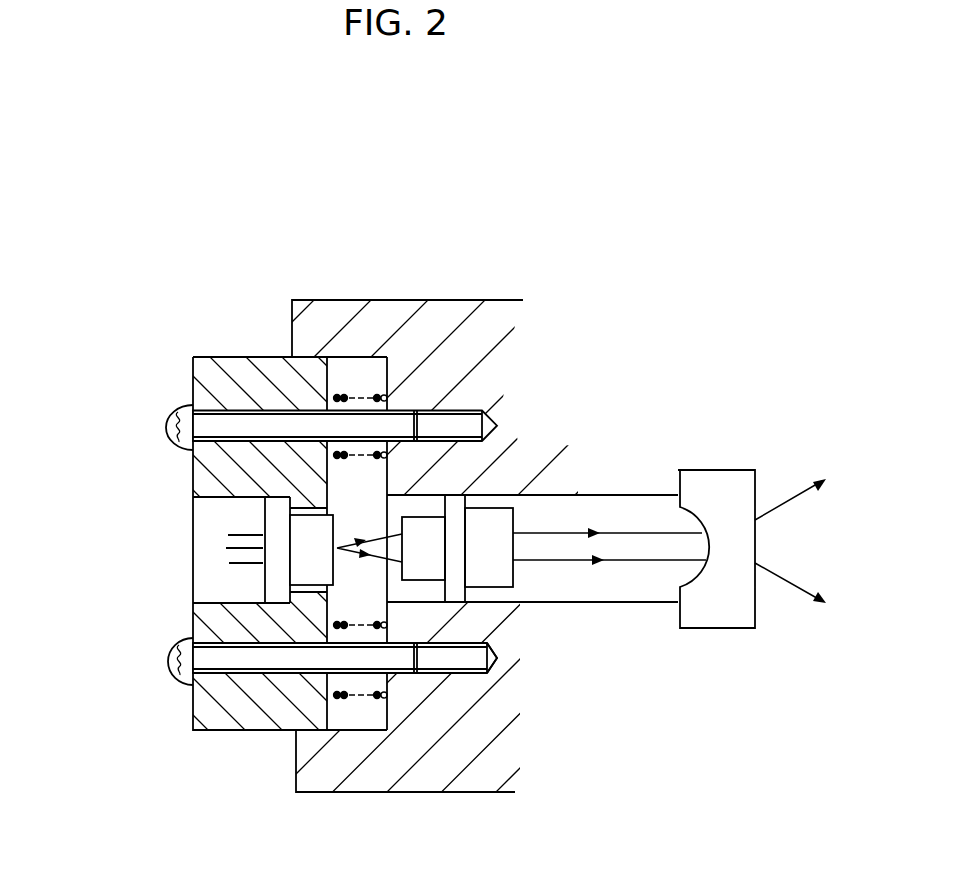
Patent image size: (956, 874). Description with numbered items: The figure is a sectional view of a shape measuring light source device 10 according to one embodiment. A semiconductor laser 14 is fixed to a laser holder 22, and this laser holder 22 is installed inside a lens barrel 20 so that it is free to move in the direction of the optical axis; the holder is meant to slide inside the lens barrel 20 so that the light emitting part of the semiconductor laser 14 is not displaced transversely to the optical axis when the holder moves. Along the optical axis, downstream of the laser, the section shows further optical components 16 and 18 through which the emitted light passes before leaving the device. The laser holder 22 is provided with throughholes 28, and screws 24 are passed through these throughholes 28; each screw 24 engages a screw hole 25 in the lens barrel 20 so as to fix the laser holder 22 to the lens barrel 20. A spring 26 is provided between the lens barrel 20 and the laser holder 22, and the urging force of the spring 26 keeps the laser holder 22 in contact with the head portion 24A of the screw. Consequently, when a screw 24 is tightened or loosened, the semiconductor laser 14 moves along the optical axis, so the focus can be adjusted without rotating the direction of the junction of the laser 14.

The laser module assembly 10 is at (452, 226).
The semiconductor laser 14 is at (264, 532).
The collimating lens assembly 16 is at (500, 593).
The output lens 18 is at (709, 630).
The lens barrel 20 is at (495, 298).
The laser holder 22 is at (232, 358).
The screw 24 is at (223, 427).
The head portion 24A is at (179, 408).
The screw hole 25 is at (420, 677).
The spring 26 is at (350, 393).
The throughhole 28 is at (306, 398).